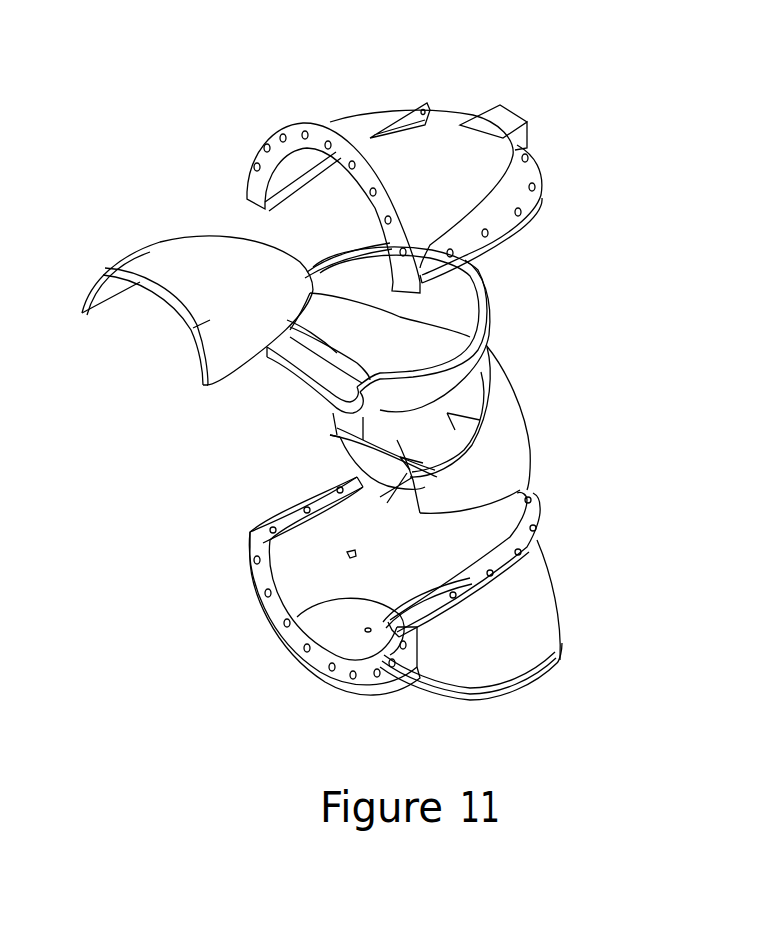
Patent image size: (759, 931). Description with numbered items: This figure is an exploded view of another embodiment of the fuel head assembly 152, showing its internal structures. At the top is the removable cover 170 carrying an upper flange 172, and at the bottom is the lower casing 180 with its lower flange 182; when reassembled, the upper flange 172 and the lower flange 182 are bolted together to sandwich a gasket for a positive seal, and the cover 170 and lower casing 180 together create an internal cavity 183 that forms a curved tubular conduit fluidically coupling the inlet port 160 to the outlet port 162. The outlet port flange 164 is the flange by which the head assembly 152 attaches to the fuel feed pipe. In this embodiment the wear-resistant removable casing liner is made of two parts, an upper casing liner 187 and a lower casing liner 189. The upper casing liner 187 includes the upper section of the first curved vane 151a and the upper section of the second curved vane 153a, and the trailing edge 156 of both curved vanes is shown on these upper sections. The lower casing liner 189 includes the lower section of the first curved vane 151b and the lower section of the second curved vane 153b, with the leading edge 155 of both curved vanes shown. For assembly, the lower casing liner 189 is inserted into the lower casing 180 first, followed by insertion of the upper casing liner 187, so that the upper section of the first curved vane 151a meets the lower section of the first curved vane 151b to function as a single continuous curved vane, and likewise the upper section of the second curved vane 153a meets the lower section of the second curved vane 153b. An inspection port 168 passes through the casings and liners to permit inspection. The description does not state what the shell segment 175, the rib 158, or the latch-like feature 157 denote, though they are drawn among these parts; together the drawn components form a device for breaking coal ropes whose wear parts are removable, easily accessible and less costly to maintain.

The fuel head assembly 152 is at (645, 178).
The removable cover 170 is at (370, 120).
The upper flange 172 is at (258, 157).
The shell segment 175 is at (158, 233).
The upper section of the first curved vane 151a is at (328, 318).
The upper section of the second curved vane 153a is at (293, 360).
The trailing edge 156 is at (318, 352).
The upper casing liner 187 is at (485, 305).
The lower section of the first curved vane 151b is at (443, 420).
The lower casing liner 189 is at (512, 428).
The rib 158 is at (340, 433).
The lower section of the second curved vane 153b is at (375, 466).
The latch 157 is at (462, 440).
The leading edge 155 is at (395, 490).
The outlet port flange 164 is at (258, 582).
The outlet port 162 is at (305, 580).
The lower flange 182 is at (295, 512).
The inspection port 168 is at (350, 560).
The internal cavity 183 is at (477, 534).
The lower casing 180 is at (556, 580).
The inlet port 160 is at (485, 700).